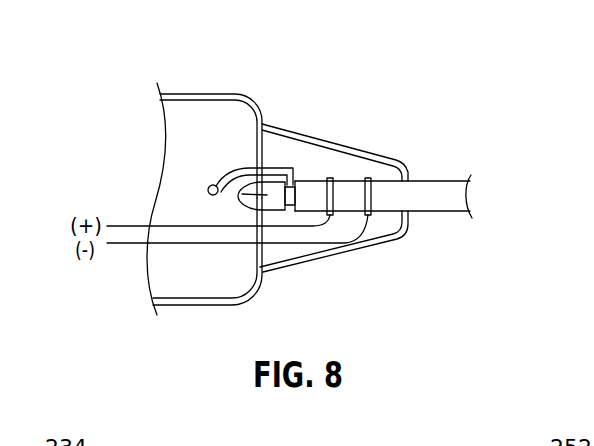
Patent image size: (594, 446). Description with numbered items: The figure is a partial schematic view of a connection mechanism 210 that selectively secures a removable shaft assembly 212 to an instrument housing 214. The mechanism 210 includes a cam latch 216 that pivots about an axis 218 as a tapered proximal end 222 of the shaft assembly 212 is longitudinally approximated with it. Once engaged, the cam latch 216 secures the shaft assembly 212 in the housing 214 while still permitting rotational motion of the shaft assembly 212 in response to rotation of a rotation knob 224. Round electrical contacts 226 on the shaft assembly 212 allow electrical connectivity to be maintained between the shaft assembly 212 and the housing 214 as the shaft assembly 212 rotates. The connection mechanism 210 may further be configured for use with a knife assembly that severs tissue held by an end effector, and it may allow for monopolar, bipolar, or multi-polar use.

The connection mechanism 210 is at (324, 74).
The shaft assembly 212 is at (438, 188).
The instrument housing 214 is at (222, 286).
The cam latch 216 is at (250, 168).
The axis 218 is at (208, 189).
The tapered proximal end 222 is at (274, 204).
The rotation knob 224 is at (380, 229).
The round electrical contacts 226 is at (368, 178).